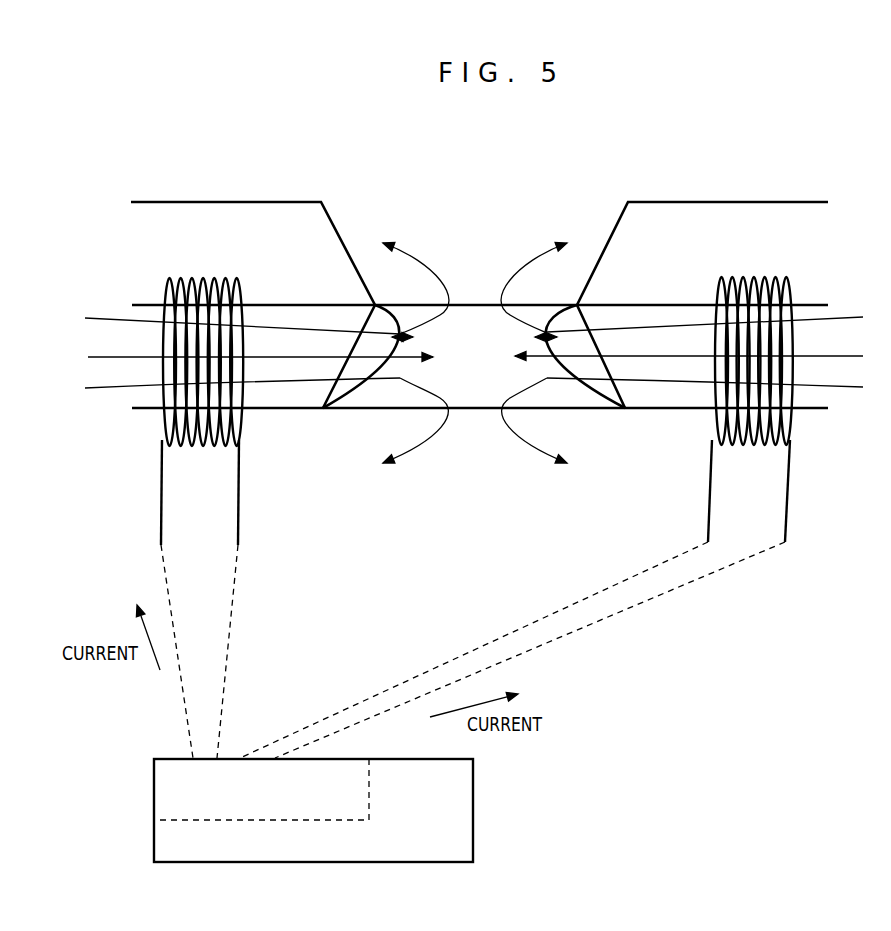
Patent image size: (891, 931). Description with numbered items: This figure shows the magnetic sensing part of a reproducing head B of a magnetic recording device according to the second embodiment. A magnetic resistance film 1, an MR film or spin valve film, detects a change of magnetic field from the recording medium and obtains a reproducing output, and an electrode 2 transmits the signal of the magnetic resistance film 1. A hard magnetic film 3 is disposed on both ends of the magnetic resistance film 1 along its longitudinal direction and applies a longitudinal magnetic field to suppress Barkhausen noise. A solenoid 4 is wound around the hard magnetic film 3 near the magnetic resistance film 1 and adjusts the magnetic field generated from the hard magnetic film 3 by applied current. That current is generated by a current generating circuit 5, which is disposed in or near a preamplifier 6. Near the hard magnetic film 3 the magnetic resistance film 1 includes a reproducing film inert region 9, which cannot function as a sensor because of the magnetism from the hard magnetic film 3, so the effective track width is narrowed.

The magnetic resistance film 1 is at (477, 397).
The electrode 2 is at (281, 228).
The hard magnetic film 3 is at (662, 317).
The solenoid 4 is at (244, 425).
The current generating circuit 5 is at (162, 776).
The preamplifier 6 is at (463, 790).
The reproducing film inert region 9 is at (572, 337).
The reproducing head B is at (785, 200).